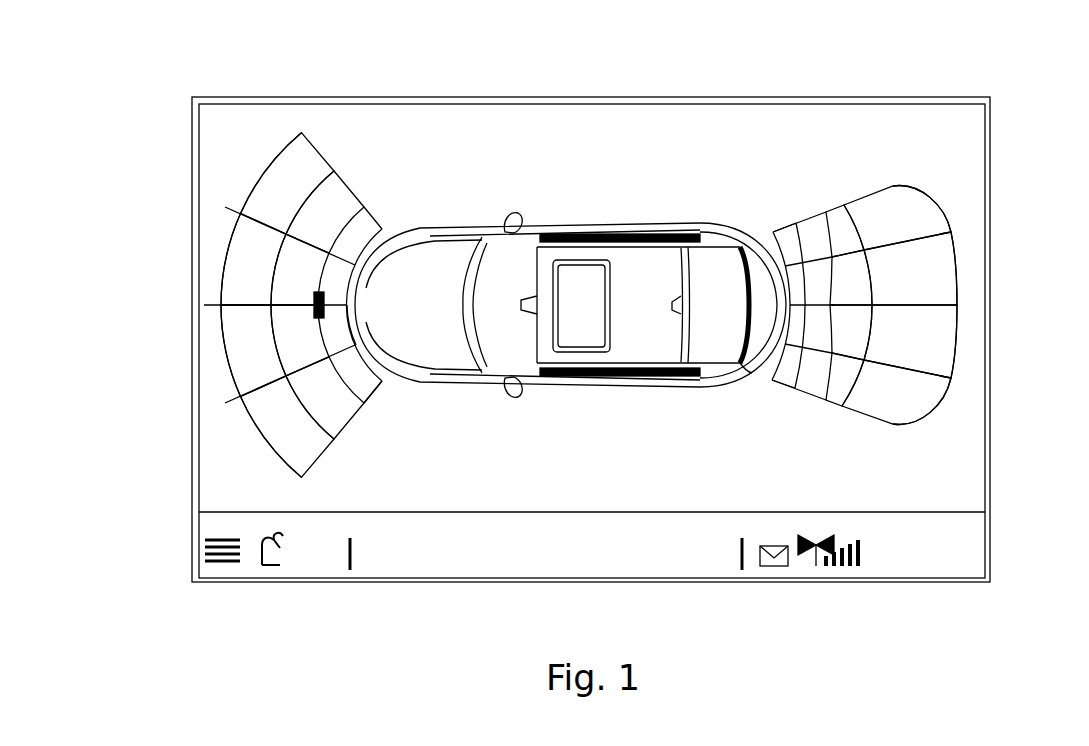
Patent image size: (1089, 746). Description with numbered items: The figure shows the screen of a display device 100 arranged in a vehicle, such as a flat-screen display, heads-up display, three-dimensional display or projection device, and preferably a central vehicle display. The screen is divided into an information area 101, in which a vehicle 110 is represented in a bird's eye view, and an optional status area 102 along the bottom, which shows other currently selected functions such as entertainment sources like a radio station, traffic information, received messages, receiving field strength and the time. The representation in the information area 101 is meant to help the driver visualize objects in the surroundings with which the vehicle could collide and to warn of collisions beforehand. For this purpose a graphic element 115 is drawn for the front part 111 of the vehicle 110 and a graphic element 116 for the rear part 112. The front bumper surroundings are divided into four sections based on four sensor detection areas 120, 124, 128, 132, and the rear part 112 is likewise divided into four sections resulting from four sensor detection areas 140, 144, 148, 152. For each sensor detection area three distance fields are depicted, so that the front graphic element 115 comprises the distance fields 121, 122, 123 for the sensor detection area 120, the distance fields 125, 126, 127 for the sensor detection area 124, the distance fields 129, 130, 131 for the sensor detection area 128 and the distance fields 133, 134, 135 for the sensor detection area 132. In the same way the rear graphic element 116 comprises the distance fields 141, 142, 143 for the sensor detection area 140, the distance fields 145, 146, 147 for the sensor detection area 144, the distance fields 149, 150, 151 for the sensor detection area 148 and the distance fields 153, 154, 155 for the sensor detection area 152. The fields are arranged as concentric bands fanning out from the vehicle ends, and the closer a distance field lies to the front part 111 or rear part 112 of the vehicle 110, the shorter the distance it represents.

The display device 100 is at (945, 95).
The information area 101 is at (690, 105).
The status area 102 is at (562, 583).
The vehicle 110 is at (622, 270).
The front part 111 is at (472, 230).
The rear part 112 is at (692, 232).
The graphic element 115 is at (325, 143).
The graphic element 116 is at (870, 190).
The sensor detection area 120 is at (253, 184).
The distance field 121 is at (430, 242).
The distance field 122 is at (325, 212).
The distance field 123 is at (288, 183).
The sensor detection area 124 is at (221, 261).
The distance field 125 is at (368, 293).
The distance field 126 is at (300, 269).
The distance field 127 is at (253, 260).
The sensor detection area 128 is at (221, 357).
The distance field 129 is at (365, 328).
The distance field 130 is at (300, 340).
The distance field 131 is at (253, 351).
The sensor detection area 132 is at (250, 438).
The distance field 133 is at (385, 395).
The distance field 134 is at (325, 398).
The distance field 135 is at (288, 426).
The sensor detection area 140 is at (930, 181).
The distance field 141 is at (772, 231).
The distance field 142 is at (842, 231).
The distance field 143 is at (897, 218).
The sensor detection area 144 is at (960, 266).
The distance field 145 is at (772, 300).
The distance field 146 is at (851, 277).
The distance field 147 is at (910, 268).
The sensor detection area 148 is at (960, 358).
The distance field 149 is at (770, 332).
The distance field 150 is at (851, 332).
The distance field 151 is at (910, 341).
The sensor detection area 152 is at (930, 435).
The distance field 153 is at (782, 386).
The distance field 154 is at (840, 379).
The distance field 155 is at (896, 392).